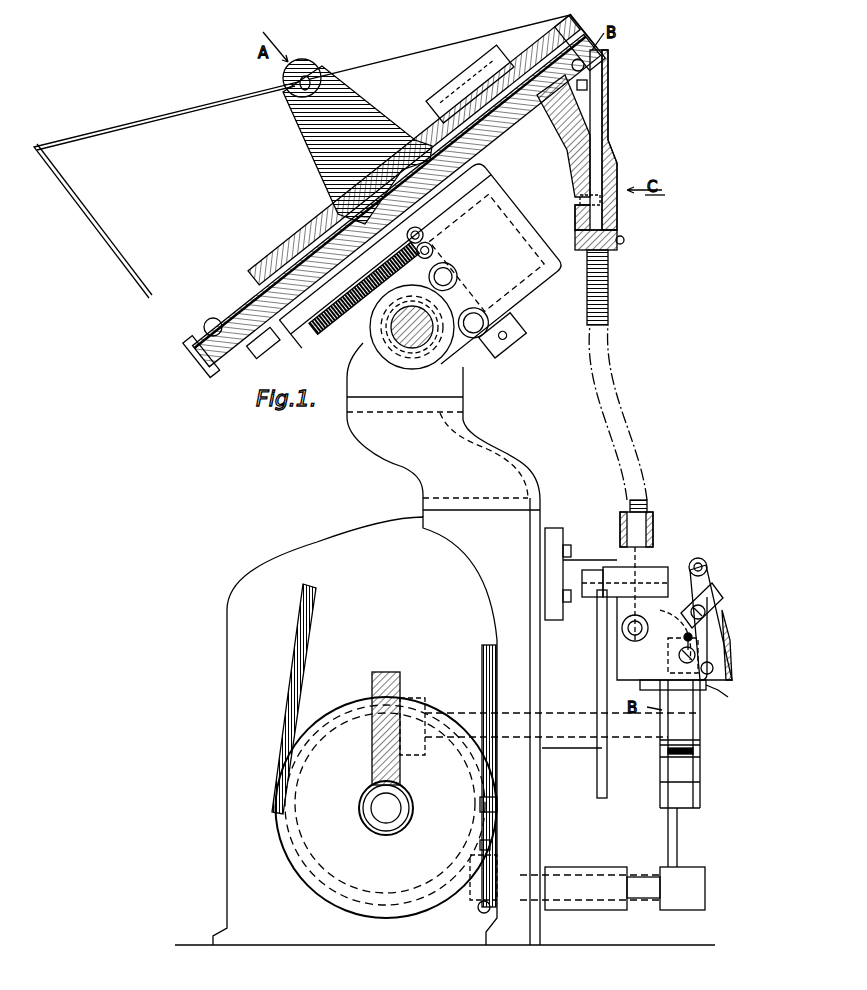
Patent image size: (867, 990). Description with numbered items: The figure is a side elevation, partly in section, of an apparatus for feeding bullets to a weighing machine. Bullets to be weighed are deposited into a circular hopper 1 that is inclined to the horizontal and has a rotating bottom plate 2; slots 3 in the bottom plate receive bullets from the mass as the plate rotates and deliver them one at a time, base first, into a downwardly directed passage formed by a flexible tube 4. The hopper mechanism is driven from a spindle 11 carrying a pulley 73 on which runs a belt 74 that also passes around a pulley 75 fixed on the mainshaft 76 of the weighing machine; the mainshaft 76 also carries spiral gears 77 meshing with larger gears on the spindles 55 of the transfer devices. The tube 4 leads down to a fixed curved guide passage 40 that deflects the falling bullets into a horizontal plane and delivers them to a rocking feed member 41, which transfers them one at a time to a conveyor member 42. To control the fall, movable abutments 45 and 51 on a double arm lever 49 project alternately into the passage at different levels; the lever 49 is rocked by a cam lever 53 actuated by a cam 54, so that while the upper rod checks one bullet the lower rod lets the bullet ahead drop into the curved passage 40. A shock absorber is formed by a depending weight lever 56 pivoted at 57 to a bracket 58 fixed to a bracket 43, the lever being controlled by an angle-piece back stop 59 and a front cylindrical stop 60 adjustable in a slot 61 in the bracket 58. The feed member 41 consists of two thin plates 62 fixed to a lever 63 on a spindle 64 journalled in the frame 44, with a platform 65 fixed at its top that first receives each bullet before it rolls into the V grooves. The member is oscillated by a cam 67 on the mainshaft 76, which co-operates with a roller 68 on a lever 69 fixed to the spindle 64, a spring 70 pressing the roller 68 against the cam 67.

The circular hopper 1 is at (150, 290).
The rotating bottom plate 2 is at (397, 200).
The slots 3 is at (205, 348).
The flexible tube 4 is at (597, 333).
The spindle 11 is at (405, 340).
The fixed curved guide passage 40 is at (642, 656).
The rocking feed member 41 is at (717, 752).
The conveyor member 42 is at (690, 713).
The bracket 43 is at (587, 555).
The frame 44 is at (510, 697).
The movable abutment 45 is at (647, 550).
The double arm lever 49 is at (648, 572).
The movable abutment 51 is at (625, 633).
The cam lever 53 is at (602, 607).
The cam 54 is at (602, 763).
The spindle 55 is at (470, 717).
The lever 56 is at (718, 640).
The pivot 57 is at (707, 567).
The bracket 58 is at (710, 590).
The back stop 59 is at (705, 612).
The front cylindrical stop 60 is at (686, 632).
The slot 61 is at (687, 637).
The thin plates 62 is at (667, 745).
The lever 63 is at (668, 830).
The spindle 64 is at (643, 885).
The platform 65 is at (717, 687).
The cam 67 is at (303, 753).
The roller 68 is at (494, 803).
The lever 69 is at (488, 845).
The spring 70 is at (490, 855).
The pulley 73 is at (390, 673).
The belt 74 is at (305, 647).
The pulley 75 is at (302, 872).
The mainshaft 76 is at (390, 807).
The spiral gears 77 is at (366, 816).